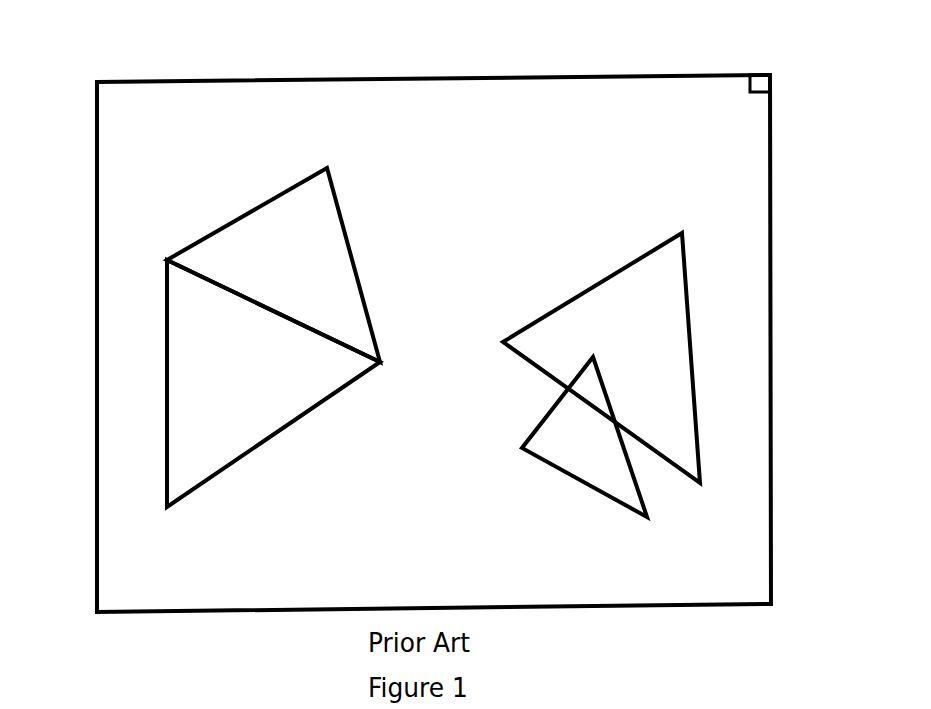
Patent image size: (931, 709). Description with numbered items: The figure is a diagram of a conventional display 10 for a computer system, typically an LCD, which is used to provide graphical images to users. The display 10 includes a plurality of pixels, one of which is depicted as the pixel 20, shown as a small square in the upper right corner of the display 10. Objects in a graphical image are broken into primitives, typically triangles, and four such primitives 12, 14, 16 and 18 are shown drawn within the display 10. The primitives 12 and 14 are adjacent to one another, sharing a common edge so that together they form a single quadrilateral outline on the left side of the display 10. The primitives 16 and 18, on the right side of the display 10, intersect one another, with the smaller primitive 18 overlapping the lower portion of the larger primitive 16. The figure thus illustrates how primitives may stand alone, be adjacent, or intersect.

The display 10 is at (433, 29).
The primitive 12 is at (167, 322).
The primitive 14 is at (306, 177).
The primitive 16 is at (690, 330).
The primitive 18 is at (647, 517).
The pixel 20 is at (758, 74).